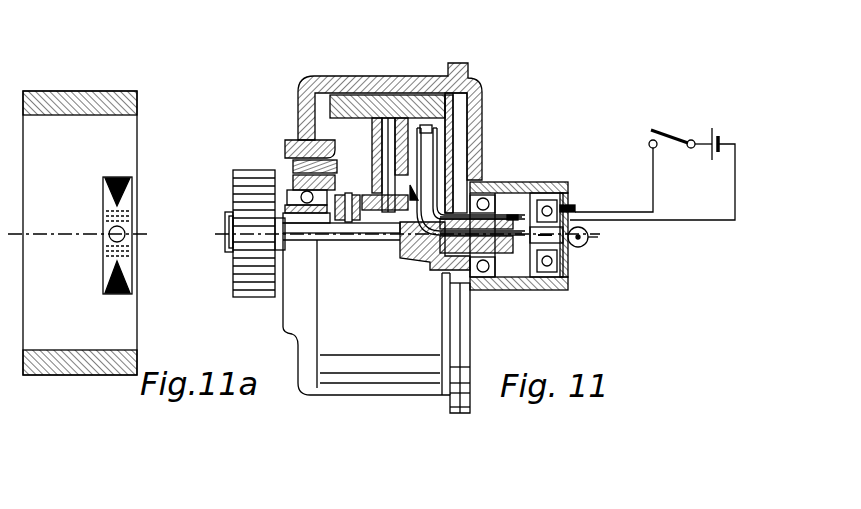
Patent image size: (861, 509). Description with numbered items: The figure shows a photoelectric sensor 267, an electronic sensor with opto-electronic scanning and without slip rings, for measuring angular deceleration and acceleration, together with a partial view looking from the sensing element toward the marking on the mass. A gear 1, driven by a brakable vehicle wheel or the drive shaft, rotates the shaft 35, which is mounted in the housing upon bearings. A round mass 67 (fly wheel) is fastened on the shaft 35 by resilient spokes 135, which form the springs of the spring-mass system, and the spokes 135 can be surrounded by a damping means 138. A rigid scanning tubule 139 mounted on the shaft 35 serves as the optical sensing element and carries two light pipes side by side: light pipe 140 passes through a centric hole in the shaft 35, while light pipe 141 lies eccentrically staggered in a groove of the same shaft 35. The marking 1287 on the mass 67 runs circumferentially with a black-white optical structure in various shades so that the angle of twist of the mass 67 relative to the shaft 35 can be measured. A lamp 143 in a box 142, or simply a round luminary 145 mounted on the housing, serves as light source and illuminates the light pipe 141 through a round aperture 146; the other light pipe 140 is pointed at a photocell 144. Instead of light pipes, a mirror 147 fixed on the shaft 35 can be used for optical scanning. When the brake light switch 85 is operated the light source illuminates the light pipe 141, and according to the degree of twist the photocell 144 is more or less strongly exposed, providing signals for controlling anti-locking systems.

In FIG. 11, the gear 1 is at (254, 170).
In FIG. 11, the shaft 35 is at (330, 232).
In FIG. 11A, the mass 67 is at (138, 103).
In FIG. 11, the mass 67 is at (338, 97).
In FIG. 11, the photoelectric sensor 267 is at (300, 88).
In FIG. 11, the brake light switch 85 is at (668, 128).
In FIG. 11A, the marking 1287 is at (128, 270).
In FIG. 11, the marking 1287 is at (470, 83).
In FIG. 11, the resilient spokes 135 is at (387, 100).
In FIG. 11, the damping means 138 is at (412, 100).
In FIG. 11A, the scanning tubule 139 is at (126, 228).
In FIG. 11, the scanning tubule 139 is at (436, 142).
In FIG. 11, the light pipe 140 is at (427, 167).
In FIG. 11, the light pipe 141 is at (435, 188).
In FIG. 11, the box 142 is at (567, 182).
In FIG. 11, the lamp 143 is at (569, 208).
In FIG. 11, the photocell 144 is at (600, 250).
In FIG. 11, the round luminary 145 is at (565, 268).
In FIG. 11, the round aperture 146 is at (523, 255).
In FIG. 11, the mirror 147 is at (420, 240).